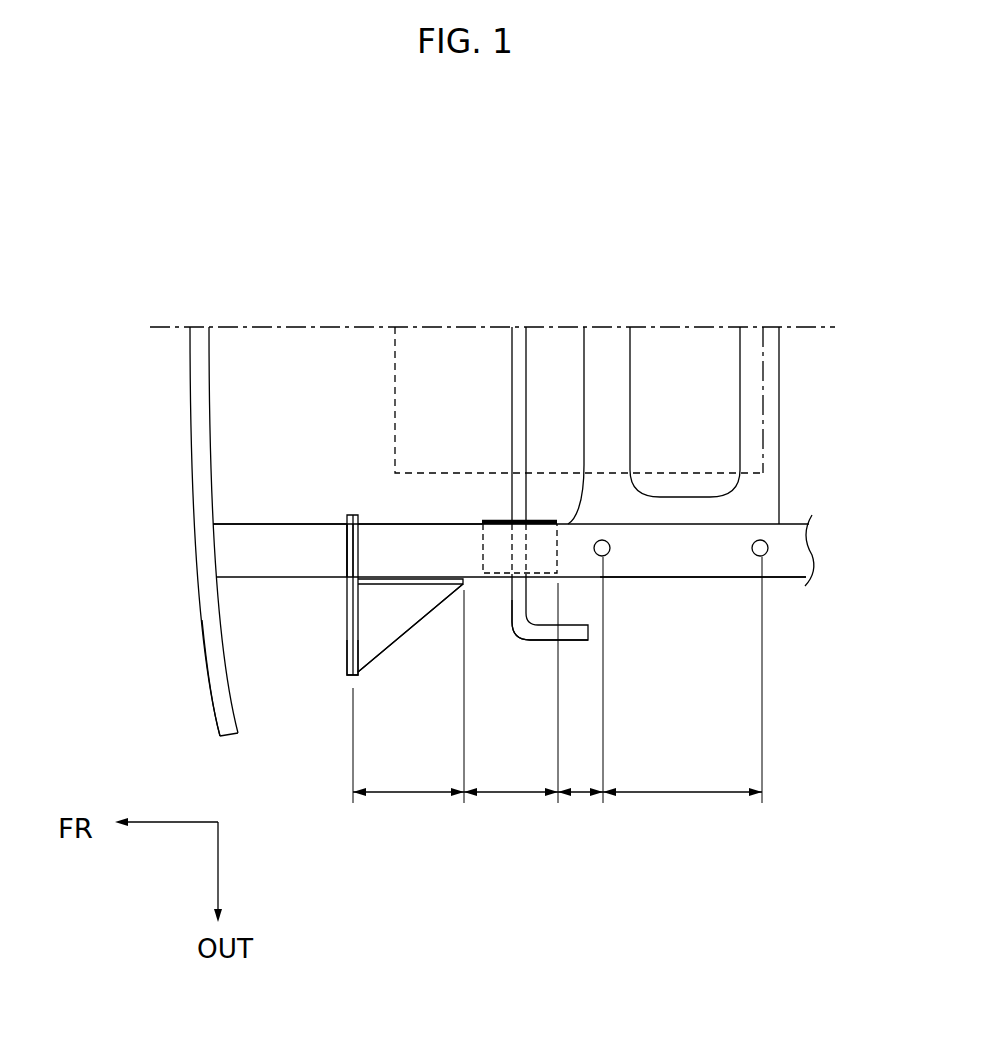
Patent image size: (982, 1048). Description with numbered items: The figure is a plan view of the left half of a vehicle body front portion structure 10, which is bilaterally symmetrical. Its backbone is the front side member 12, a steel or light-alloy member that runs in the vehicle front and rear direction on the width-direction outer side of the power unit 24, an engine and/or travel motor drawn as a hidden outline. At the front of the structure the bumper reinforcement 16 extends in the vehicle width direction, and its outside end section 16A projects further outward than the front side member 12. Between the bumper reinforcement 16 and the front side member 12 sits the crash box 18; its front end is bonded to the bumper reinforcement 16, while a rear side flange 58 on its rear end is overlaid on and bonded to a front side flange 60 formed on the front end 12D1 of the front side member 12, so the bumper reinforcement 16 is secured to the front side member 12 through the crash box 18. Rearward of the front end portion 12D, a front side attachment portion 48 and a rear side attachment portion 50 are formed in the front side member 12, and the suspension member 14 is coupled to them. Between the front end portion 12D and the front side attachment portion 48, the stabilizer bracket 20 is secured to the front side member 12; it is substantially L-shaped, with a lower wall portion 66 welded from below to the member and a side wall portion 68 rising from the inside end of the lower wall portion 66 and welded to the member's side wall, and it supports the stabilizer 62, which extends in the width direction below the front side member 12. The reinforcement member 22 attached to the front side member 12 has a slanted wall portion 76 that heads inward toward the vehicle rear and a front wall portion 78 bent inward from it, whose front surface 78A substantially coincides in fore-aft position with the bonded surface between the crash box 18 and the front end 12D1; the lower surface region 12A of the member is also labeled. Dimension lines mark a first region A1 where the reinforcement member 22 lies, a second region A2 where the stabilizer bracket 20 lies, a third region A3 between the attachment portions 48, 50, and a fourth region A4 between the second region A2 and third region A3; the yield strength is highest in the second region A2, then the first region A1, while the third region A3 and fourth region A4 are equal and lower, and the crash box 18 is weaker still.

The vehicle body front portion structure 10 is at (543, 268).
The front side member 12 is at (676, 583).
The rocker lower portion 12A is at (718, 578).
The front end portion 12D is at (400, 548).
The front end 12D1 is at (347, 535).
The suspension member 14 is at (780, 417).
The bumper reinforcement 16 is at (185, 428).
The vehicle width direction outside end section 16A is at (205, 650).
The crash box 18 is at (233, 524).
The stabilizer bracket 20 is at (478, 546).
The reinforcement member 22 is at (400, 650).
The power unit 24 is at (395, 404).
The front side attachment portion 48 is at (608, 556).
The rear side attachment portion 50 is at (767, 555).
The rear side flange 58 is at (347, 552).
The front side flange 60 is at (352, 562).
The stabilizer 62 is at (511, 414).
The lower wall portion 66 is at (497, 578).
The side wall portion 68 is at (495, 521).
The slanted wall portion 76 is at (428, 614).
The front wall portion 78 is at (353, 617).
The front surface 78A is at (353, 647).
The first region A1 is at (408, 795).
The second region A2 is at (516, 795).
The third region A3 is at (683, 795).
The fourth region A4 is at (581, 795).